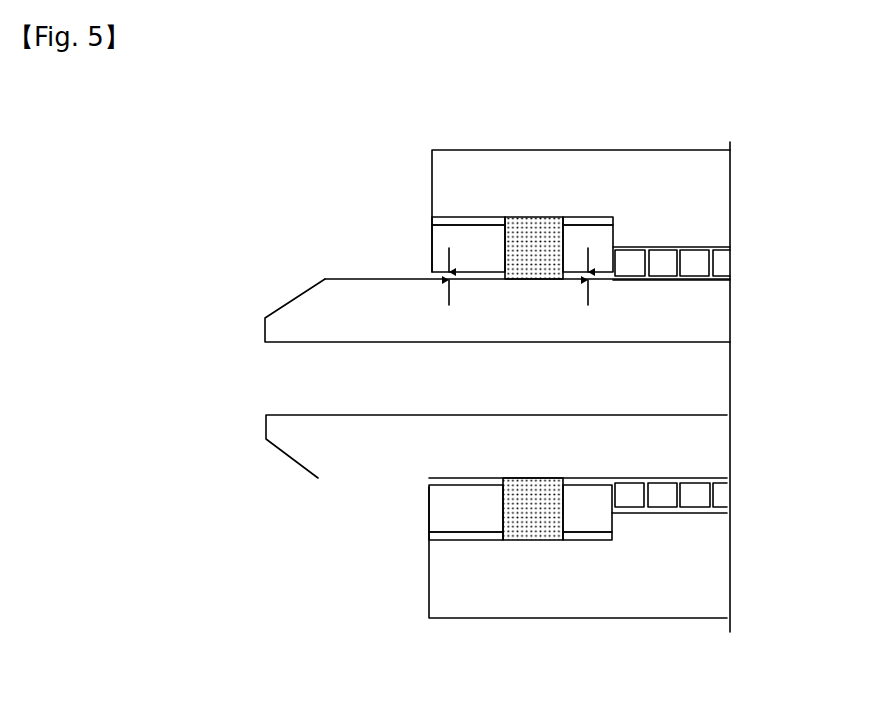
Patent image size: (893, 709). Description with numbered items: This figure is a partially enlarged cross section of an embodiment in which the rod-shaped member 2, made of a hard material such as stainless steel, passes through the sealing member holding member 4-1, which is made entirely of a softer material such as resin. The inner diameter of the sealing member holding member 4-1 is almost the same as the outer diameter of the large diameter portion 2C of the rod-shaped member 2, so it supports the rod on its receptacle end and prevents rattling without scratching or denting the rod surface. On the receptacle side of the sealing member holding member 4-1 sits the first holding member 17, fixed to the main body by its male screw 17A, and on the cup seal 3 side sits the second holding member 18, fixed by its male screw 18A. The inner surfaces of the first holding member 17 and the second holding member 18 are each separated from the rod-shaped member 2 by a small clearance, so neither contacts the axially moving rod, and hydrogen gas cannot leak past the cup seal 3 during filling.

The rod-shaped member 2 is at (300, 308).
The large diameter portion 2C is at (538, 298).
The cup seal 3 is at (674, 252).
The sealing member holding member 4-1 is at (527, 230).
The first holding member 17 is at (475, 233).
The male screw 17A is at (447, 220).
The second holding member 18 is at (579, 235).
The male screw 18A is at (600, 220).